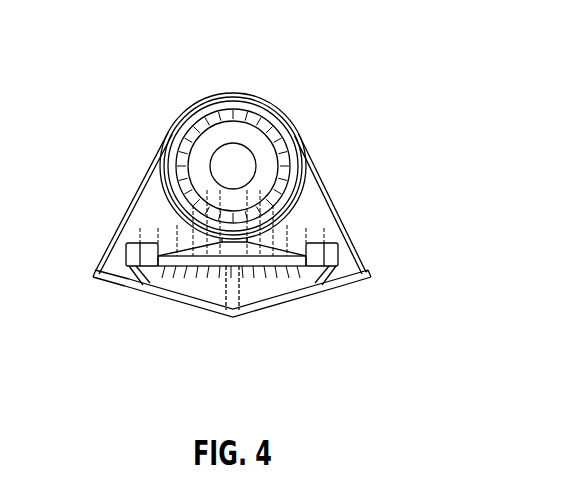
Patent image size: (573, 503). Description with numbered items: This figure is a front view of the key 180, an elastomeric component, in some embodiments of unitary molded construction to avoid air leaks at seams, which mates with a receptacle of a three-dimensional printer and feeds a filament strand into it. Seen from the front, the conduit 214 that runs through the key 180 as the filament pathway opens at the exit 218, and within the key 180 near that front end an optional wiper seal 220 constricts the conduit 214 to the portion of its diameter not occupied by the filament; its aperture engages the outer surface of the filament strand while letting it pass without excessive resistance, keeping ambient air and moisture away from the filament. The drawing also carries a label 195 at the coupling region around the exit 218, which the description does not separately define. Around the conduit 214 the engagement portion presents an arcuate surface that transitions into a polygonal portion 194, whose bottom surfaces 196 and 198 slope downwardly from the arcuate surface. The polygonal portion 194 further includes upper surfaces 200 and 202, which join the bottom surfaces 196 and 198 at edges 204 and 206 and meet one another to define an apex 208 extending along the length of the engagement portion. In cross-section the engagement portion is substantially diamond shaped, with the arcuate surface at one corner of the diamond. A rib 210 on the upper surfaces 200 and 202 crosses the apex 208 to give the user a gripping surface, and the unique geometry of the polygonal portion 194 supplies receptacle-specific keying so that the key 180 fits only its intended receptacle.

The key 180 is at (338, 190).
The polygonal portion 194 is at (355, 238).
The cylindrical body 195 is at (228, 97).
The bottom surface 196 is at (132, 203).
The bottom surface 198 is at (310, 152).
The upper surface 200 is at (108, 280).
The upper surface 202 is at (353, 279).
The edge 204 is at (95, 275).
The edge 206 is at (373, 279).
The apex 208 is at (232, 318).
The rib 210 is at (258, 313).
The conduit 214 is at (233, 160).
The exit 218 is at (222, 125).
The wiper seal 220 is at (222, 146).